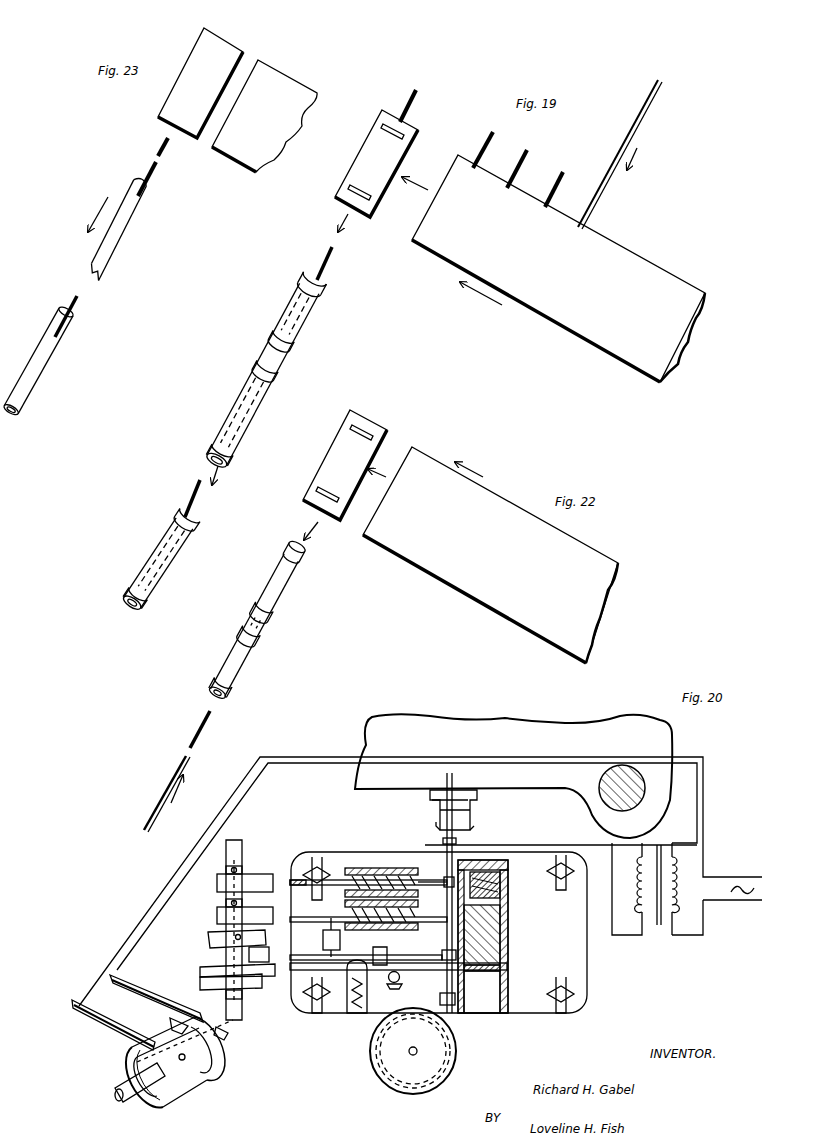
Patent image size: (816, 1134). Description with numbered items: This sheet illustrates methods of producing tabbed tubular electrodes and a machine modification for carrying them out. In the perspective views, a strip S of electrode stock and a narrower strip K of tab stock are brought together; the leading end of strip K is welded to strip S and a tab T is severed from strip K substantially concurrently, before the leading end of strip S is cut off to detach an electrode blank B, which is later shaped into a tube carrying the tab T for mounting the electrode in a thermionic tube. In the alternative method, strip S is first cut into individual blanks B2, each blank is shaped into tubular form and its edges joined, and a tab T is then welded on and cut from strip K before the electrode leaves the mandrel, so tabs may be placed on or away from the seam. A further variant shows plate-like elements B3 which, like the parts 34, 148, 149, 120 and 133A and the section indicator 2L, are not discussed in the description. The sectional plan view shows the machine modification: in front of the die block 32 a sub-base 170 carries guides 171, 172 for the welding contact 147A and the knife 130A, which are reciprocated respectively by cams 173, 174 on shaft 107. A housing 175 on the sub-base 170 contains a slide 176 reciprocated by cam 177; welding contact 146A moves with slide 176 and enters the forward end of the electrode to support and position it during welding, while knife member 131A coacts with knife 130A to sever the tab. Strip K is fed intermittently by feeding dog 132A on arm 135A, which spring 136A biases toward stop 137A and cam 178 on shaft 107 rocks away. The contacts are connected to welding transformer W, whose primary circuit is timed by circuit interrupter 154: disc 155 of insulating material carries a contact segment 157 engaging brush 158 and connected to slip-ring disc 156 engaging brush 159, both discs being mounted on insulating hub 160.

In FIG. 23, the hub assembly plate / sleeve B3 is at (226, 50).
In FIG. 23, the strip S is at (290, 90).
In FIG. 19, the strip S is at (622, 262).
In FIG. 22, the strip S is at (483, 503).
In FIG. 23, the strip K is at (158, 147).
In FIG. 19, the strip K is at (634, 146).
In FIG. 22, the strip K is at (150, 812).
In FIG. 20, the strip K is at (447, 902).
In FIG. 23, the tab T is at (146, 168).
In FIG. 19, the tab T is at (482, 156).
In FIG. 22, the tab T is at (186, 730).
In FIG. 19, the electrode blank B is at (421, 128).
In FIG. 20, the electrode blank B is at (457, 841).
In FIG. 22, the blank B2 is at (372, 420).
In FIG. 20, the die block 32 is at (580, 778).
In FIG. 20, the shaft 34 is at (598, 786).
In FIG. 20, the power leads 149 is at (148, 916).
In FIG. 20, the primary winding 148 is at (624, 956).
In FIG. 20, the welding transformer W is at (660, 936).
In FIG. 20, the welding contact 147A is at (444, 876).
In FIG. 20, the bracket 120 is at (478, 797).
In FIG. 20, the sub-base 170 is at (530, 1005).
In FIG. 20, the section indicator 2L is at (210, 890).
In FIG. 20, the guide 171 is at (368, 875).
In FIG. 20, the guide 172 is at (400, 930).
In FIG. 20, the knife member 131A is at (500, 926).
In FIG. 20, the welding contact 146A is at (500, 902).
In FIG. 20, the slide 176 is at (500, 960).
In FIG. 20, the housing 175 is at (508, 988).
In FIG. 20, the arm 135A is at (368, 960).
In FIG. 20, the stop 137A is at (323, 938).
In FIG. 20, the spring 136A is at (368, 980).
In FIG. 20, the feeding dog 132A is at (413, 981).
In FIG. 20, the contact 133A is at (434, 998).
In FIG. 20, the knife 130A is at (440, 922).
In FIG. 20, the shaft 107 is at (243, 852).
In FIG. 20, the cam 173 is at (217, 886).
In FIG. 20, the cam 174 is at (217, 916).
In FIG. 20, the cam 178 is at (262, 940).
In FIG. 20, the cam 177 is at (262, 985).
In FIG. 20, the brush 158 is at (157, 992).
In FIG. 20, the brush 159 is at (104, 1028).
In FIG. 20, the circuit interrupter 154 is at (148, 1020).
In FIG. 20, the disc 155 is at (220, 1068).
In FIG. 20, the disc 156 is at (170, 1103).
In FIG. 20, the contact bar or segment 157 is at (167, 1025).
In FIG. 20, the hub 160 is at (153, 1070).